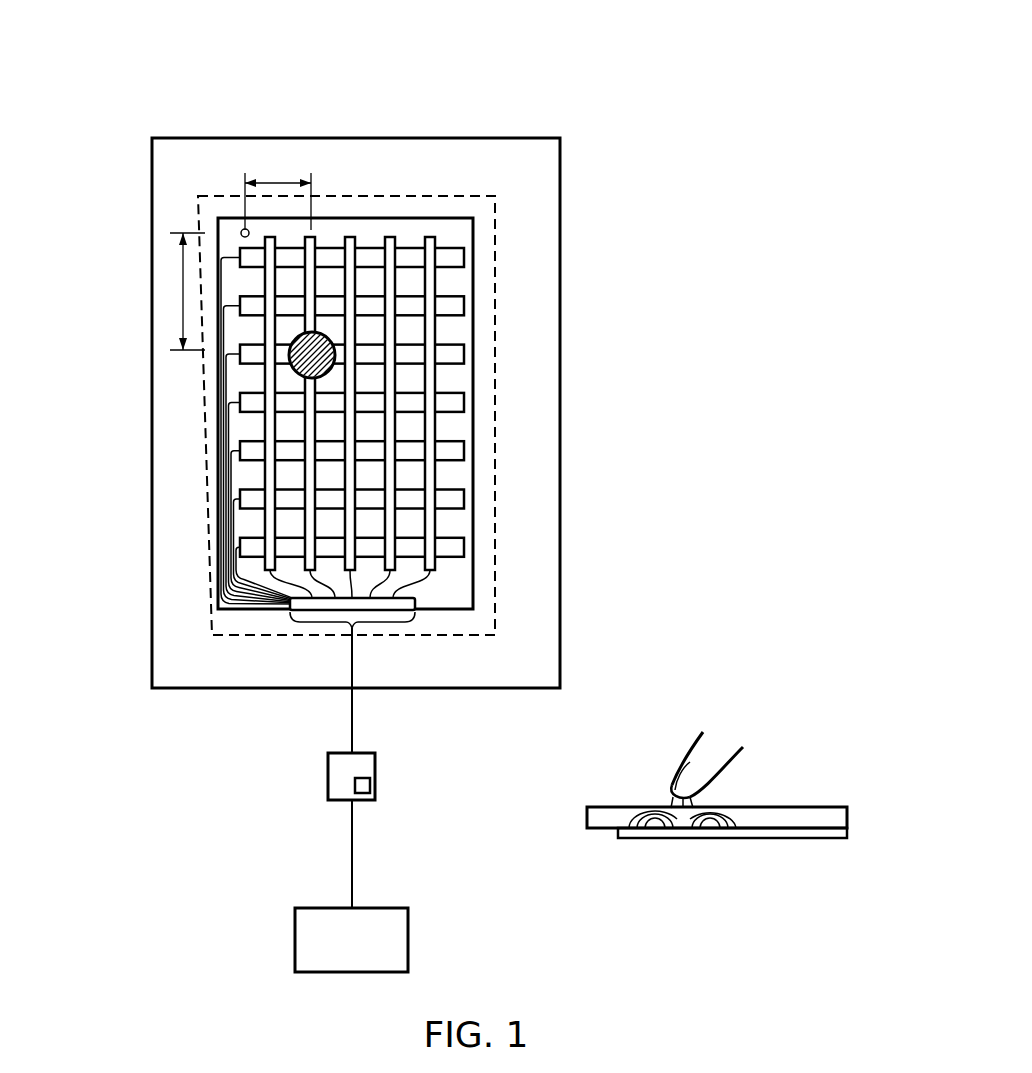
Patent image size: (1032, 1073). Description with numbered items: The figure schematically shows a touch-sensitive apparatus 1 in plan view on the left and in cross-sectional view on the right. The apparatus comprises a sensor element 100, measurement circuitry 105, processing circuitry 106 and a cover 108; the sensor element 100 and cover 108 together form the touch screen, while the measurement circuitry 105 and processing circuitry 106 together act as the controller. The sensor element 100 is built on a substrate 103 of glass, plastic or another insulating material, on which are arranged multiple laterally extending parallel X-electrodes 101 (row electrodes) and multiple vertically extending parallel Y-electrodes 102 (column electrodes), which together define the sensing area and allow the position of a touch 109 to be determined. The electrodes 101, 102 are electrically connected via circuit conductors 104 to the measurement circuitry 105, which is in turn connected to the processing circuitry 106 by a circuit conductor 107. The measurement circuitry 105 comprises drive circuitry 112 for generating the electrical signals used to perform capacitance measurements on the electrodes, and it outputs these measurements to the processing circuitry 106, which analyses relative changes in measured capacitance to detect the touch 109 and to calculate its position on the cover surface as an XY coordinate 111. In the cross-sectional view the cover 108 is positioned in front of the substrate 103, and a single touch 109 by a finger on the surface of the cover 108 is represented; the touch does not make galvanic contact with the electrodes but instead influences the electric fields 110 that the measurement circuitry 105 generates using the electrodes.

The touch-sensitive apparatus 1 is at (650, 45).
The sensor element 100 is at (497, 380).
The X-electrodes 101 is at (465, 258).
The Y-electrodes 102 is at (355, 238).
The substrate 103 is at (473, 555).
The circuit conductors 104 is at (352, 727).
The measurement circuitry 105 is at (328, 782).
The processing circuitry 106 is at (295, 947).
The circuit conductor 107 is at (352, 850).
The cover 108 is at (540, 137).
The touch 109 is at (303, 368).
The electric fields 110 is at (637, 816).
The XY coordinate 111 is at (183, 217).
The drive circuitry 112 is at (372, 786).